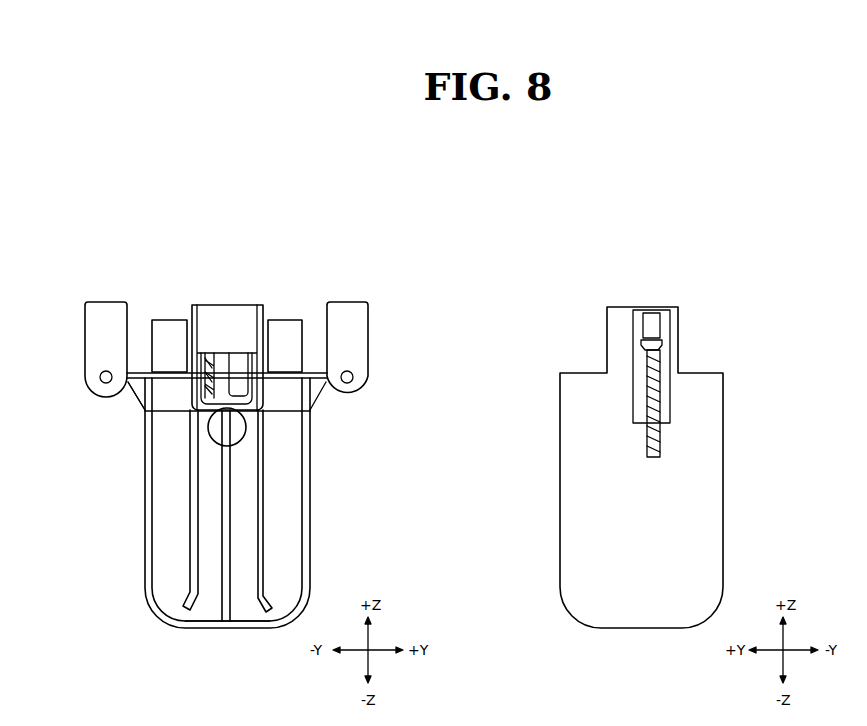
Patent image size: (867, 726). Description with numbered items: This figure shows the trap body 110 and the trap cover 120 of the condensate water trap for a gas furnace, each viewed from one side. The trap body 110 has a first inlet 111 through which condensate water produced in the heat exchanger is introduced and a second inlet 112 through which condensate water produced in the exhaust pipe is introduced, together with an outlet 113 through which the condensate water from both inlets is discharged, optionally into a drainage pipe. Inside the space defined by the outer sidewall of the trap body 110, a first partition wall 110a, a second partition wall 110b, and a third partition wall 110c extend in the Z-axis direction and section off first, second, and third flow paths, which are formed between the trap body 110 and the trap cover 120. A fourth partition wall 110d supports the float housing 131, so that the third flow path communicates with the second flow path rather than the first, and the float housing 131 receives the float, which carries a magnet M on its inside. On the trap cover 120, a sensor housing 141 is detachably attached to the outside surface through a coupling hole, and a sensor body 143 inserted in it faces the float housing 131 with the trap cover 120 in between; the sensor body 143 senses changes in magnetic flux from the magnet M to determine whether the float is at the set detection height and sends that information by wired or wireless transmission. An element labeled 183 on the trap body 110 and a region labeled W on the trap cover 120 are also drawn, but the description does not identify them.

The trap body 110 is at (145, 563).
The first partition wall 110a is at (263, 498).
The second partition wall 110b is at (232, 547).
The third partition wall 110c is at (203, 628).
The fourth partition wall 110d is at (310, 412).
The first inlet 111 is at (285, 335).
The second inlet 112 is at (170, 338).
The outlet 113 is at (247, 427).
The float housing 131 is at (237, 330).
The magnet M is at (205, 355).
The connecting bracket 183 is at (147, 410).
The trap cover 120 is at (688, 508).
The sensor housing 141 is at (637, 307).
The sensor body 143 is at (650, 330).
The water W is at (652, 390).